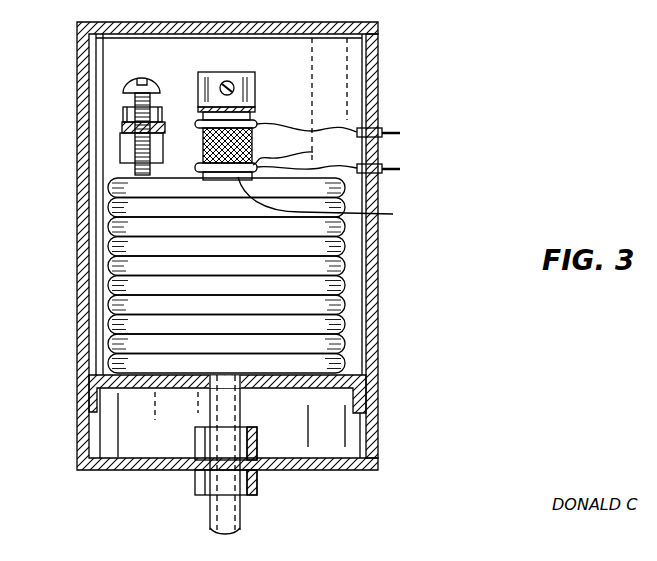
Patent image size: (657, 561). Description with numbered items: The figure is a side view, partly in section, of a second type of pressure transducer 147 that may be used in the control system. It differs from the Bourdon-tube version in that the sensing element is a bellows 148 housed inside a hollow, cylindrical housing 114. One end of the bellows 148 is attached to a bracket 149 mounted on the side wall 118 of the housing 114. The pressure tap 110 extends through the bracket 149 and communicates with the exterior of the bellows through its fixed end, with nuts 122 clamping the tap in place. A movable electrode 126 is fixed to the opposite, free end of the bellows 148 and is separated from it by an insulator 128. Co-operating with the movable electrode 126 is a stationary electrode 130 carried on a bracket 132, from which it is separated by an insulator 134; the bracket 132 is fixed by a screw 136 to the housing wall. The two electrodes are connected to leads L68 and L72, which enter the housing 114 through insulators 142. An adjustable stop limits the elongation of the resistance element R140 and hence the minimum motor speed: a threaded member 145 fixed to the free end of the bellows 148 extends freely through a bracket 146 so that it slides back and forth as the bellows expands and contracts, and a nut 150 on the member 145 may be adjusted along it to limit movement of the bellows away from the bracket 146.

The pressure tap 110 is at (242, 512).
The housing 114 is at (379, 255).
The side wall 118 is at (378, 310).
The nuts 122 is at (200, 443).
The movable electrode 126 is at (198, 167).
The insulator 128 is at (332, 203).
The stationary electrode 130 is at (256, 127).
The bracket 132 is at (213, 78).
The insulator 134 is at (253, 124).
The screw 136 is at (257, 88).
The insulators 142 is at (378, 128).
The threaded member 145 is at (155, 91).
The bracket 146 is at (122, 124).
The pressure transducer 147 is at (404, 52).
The bellows 148 is at (107, 228).
The bracket 149 is at (87, 402).
The nut 150 is at (125, 117).
The lead L72 is at (398, 132).
The lead L68 is at (398, 173).
The resistance element R140 is at (307, 154).